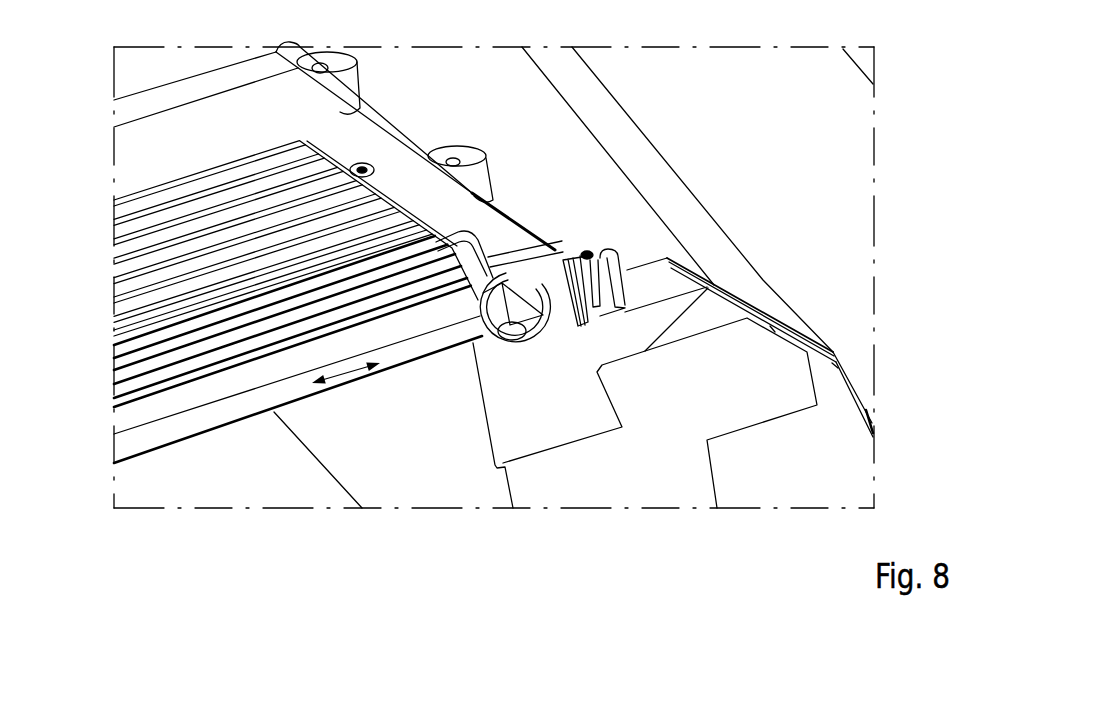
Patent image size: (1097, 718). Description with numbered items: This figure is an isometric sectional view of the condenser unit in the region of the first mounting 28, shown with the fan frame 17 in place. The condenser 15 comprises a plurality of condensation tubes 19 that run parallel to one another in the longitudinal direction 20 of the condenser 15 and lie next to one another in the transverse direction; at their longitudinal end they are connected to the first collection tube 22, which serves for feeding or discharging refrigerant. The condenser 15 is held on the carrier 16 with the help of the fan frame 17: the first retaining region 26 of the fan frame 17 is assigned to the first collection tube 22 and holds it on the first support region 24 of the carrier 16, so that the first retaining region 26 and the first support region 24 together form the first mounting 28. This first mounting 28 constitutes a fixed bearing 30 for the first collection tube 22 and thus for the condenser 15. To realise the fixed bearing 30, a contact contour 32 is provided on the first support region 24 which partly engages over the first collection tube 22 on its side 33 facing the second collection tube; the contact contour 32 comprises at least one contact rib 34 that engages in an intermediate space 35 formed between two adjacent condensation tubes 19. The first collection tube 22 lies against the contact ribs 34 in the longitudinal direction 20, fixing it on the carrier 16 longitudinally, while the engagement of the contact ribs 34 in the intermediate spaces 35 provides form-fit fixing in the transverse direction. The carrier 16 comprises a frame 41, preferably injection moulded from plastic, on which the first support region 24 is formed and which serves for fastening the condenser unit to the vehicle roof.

The condenser 15 is at (220, 442).
The carrier 16 is at (852, 210).
The fan frame 17 is at (402, 122).
The condensation tubes 19 is at (176, 353).
The longitudinal direction 20 is at (348, 380).
The first collection tube 22 is at (552, 258).
The first support region 24 is at (557, 322).
The first retaining region 26 is at (518, 268).
The first mounting 28 is at (541, 390).
The fixed bearing 30 is at (770, 347).
The contact contour 32 is at (512, 341).
The side 33 is at (484, 308).
The contact rib 34 is at (487, 348).
The intermediate space 35 is at (140, 377).
The frame 41 is at (845, 117).